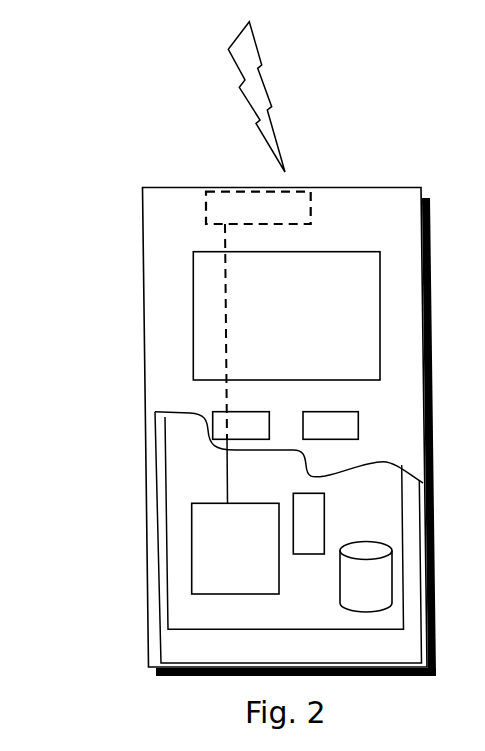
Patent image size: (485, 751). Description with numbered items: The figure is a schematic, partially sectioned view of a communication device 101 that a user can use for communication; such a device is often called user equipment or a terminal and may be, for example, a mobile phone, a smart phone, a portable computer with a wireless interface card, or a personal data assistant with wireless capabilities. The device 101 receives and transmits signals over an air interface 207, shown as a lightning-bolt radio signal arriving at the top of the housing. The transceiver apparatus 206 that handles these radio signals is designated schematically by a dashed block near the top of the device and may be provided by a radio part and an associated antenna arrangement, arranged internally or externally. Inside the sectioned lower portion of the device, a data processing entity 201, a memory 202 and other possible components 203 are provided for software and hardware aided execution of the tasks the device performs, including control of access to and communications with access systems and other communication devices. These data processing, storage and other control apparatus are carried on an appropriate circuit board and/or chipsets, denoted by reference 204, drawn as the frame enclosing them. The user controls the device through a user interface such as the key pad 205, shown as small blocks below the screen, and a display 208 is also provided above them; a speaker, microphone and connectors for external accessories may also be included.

The communication device 101 is at (142, 230).
The data processing entity 201 is at (198, 533).
The memory 202 is at (360, 588).
The other possible components 203 is at (308, 508).
The circuit board 204 is at (193, 612).
The key pad 205 is at (218, 425).
The transceiver apparatus 206 is at (298, 202).
The air interface 207 is at (288, 122).
The display 208 is at (209, 303).